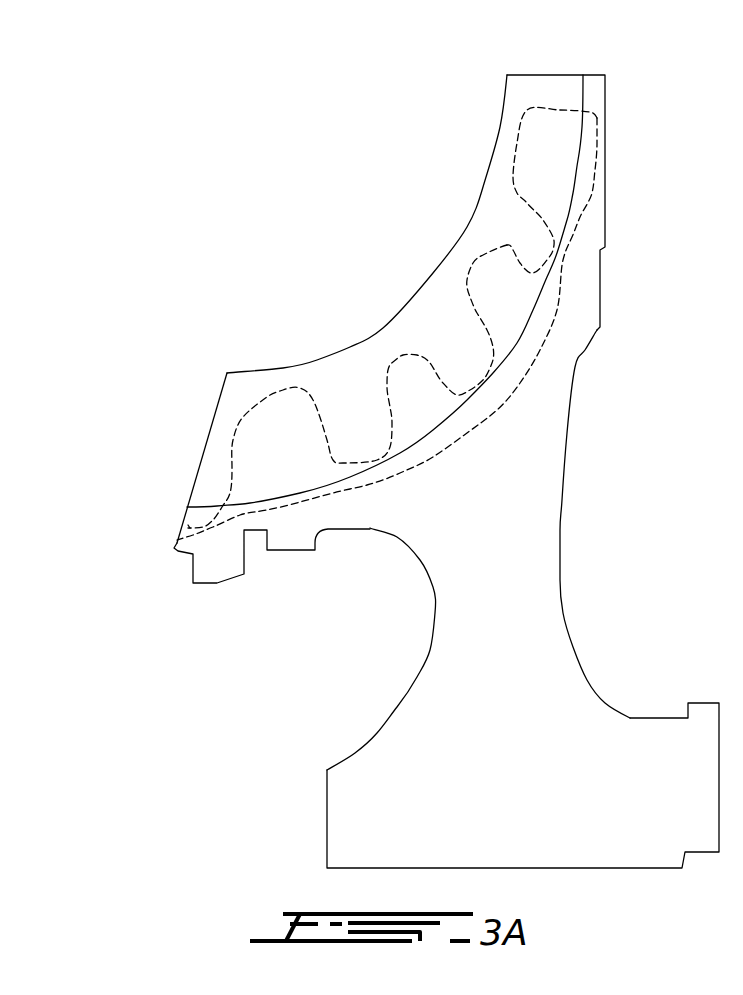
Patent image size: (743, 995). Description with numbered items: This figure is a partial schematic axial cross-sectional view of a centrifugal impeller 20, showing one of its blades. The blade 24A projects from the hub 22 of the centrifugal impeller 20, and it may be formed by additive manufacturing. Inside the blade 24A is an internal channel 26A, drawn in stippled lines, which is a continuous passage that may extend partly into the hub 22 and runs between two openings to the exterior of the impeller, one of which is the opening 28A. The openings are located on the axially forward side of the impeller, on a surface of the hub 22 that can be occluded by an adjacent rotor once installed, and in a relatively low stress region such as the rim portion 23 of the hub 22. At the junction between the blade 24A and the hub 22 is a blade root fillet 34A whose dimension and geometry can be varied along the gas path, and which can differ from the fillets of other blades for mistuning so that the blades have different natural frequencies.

The centrifugal impeller 20 is at (283, 181).
The hub 22 is at (515, 557).
The rim portion 23 is at (190, 555).
The blade 24A is at (515, 223).
The internal channel 26A is at (393, 365).
The opening 28A is at (188, 525).
The blade root fillet 34A is at (575, 198).